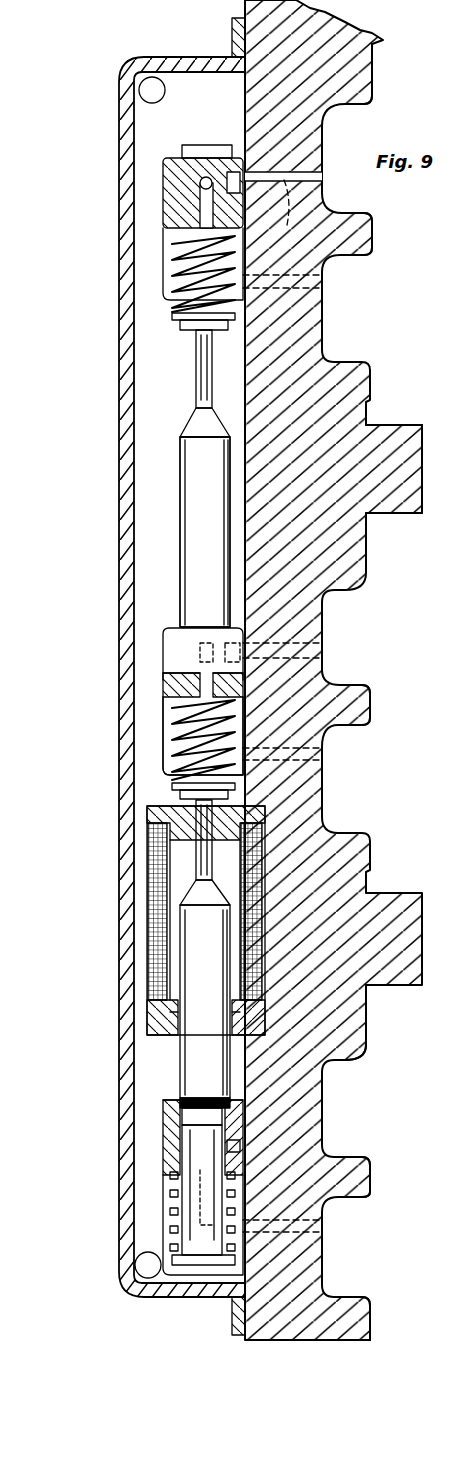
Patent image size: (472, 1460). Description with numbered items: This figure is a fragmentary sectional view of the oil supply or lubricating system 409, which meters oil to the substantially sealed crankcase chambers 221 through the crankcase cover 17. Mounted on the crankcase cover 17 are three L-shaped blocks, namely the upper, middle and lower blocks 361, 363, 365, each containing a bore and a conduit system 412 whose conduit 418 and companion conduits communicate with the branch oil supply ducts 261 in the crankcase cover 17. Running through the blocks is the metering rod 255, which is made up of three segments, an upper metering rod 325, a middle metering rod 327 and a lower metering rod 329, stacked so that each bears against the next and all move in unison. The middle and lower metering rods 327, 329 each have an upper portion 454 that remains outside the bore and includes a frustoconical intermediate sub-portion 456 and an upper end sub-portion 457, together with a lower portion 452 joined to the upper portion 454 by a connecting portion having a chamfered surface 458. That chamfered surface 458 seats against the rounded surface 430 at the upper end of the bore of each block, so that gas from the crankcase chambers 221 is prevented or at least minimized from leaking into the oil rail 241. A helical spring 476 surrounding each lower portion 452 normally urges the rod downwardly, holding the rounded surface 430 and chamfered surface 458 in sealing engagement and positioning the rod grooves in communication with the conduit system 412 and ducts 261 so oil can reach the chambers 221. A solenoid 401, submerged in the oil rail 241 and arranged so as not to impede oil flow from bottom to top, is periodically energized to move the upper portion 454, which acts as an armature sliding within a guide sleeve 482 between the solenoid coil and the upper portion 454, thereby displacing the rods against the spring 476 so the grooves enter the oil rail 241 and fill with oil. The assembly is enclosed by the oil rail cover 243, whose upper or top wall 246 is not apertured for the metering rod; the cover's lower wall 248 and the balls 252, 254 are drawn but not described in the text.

The crankcase cover 17 is at (404, 490).
The sealed crankcase chambers 221 is at (358, 107).
The oil rail 241 is at (178, 438).
The oil rail cover 243 is at (128, 790).
The upper or top wall 246 is at (197, 58).
The cover bottom wall 248 is at (195, 1295).
The lower ball 252 is at (138, 1270).
The upper ball 254 is at (140, 92).
The metering rod 255 is at (178, 510).
The branch oil supply ducts 261 is at (362, 1225).
The upper metering rod 325 is at (182, 147).
The middle metering rod 327 is at (192, 572).
The lower metering rod 329 is at (188, 1070).
The upper block 361 is at (178, 182).
The middle block 363 is at (165, 650).
The lower block 365 is at (187, 1140).
The solenoid 401 is at (262, 905).
The lubricating system 409 is at (392, 398).
The conduit system 412 is at (192, 198).
The conduit 418 is at (200, 1205).
The rounded surface 430 is at (182, 1110).
The lower portion 452 is at (243, 716).
The upper portion 454 is at (188, 603).
The intermediate sub-portion 456 is at (193, 422).
The upper end sub-portion 457 is at (196, 350).
The chamfered surface 458 is at (180, 1100).
The spring 476 is at (174, 262).
The guide sleeve 482 is at (262, 953).